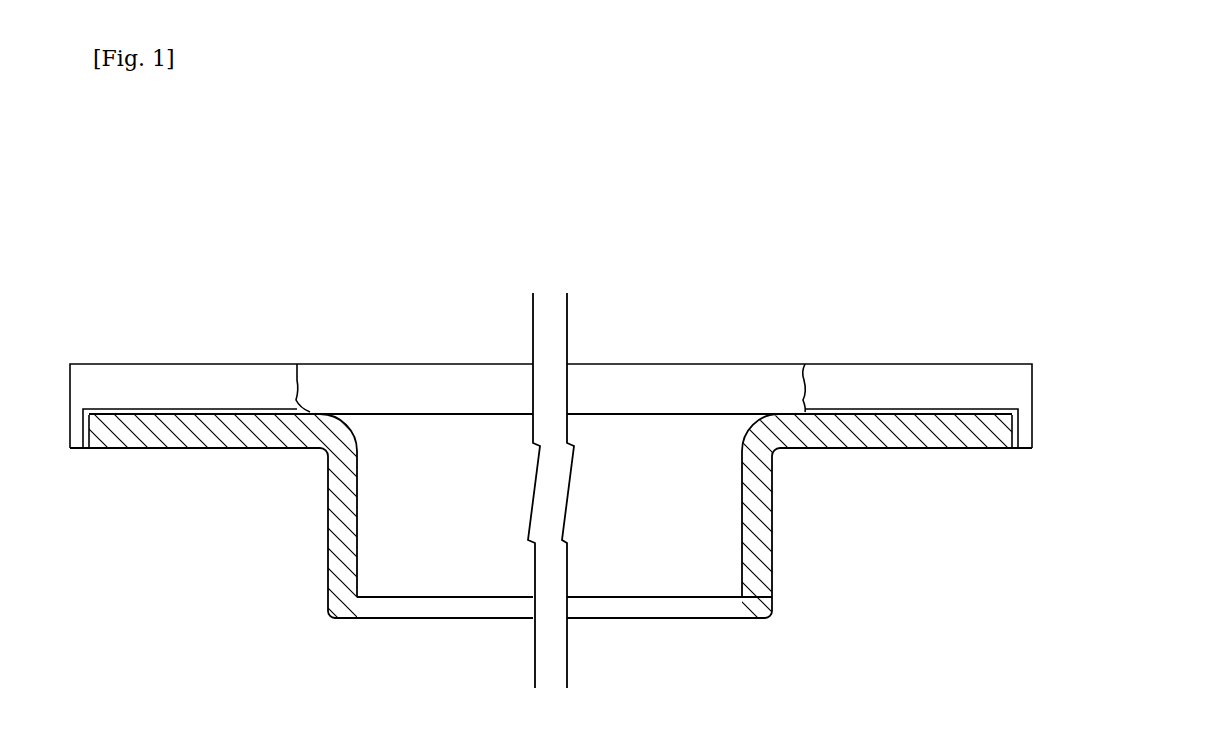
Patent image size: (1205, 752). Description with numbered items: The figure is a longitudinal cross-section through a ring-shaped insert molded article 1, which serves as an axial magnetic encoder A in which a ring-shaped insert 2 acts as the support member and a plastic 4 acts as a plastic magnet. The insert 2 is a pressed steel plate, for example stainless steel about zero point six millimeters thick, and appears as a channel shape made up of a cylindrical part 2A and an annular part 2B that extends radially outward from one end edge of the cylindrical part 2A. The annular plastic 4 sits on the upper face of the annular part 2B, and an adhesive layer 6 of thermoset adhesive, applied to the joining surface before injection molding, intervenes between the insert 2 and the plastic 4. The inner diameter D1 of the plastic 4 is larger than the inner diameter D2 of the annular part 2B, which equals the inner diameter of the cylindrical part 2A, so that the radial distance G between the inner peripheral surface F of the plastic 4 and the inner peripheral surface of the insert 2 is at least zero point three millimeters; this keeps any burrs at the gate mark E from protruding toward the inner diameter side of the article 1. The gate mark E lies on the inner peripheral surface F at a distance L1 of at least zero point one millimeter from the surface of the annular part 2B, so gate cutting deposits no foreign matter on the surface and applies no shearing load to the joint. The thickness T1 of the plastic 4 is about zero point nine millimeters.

The axial magnetic encoder A is at (880, 284).
The ring-shaped insert molded article 1 is at (624, 395).
The ring-shaped insert 2 is at (895, 495).
The cylindrical part 2A is at (772, 556).
The annular part 2B is at (870, 440).
The plastic 4 is at (918, 383).
The adhesive layer 6 is at (975, 408).
The gate mark E is at (795, 364).
The inner peripheral surface F is at (300, 408).
The inner diameter of the plastic D1 is at (296, 187).
The inner diameter of the annular part D2 is at (357, 250).
The radial distance G is at (243, 261).
The distance from the surface of the annular part to the gate mark L1 is at (719, 437).
The thickness of the plastic T1 is at (1037, 364).